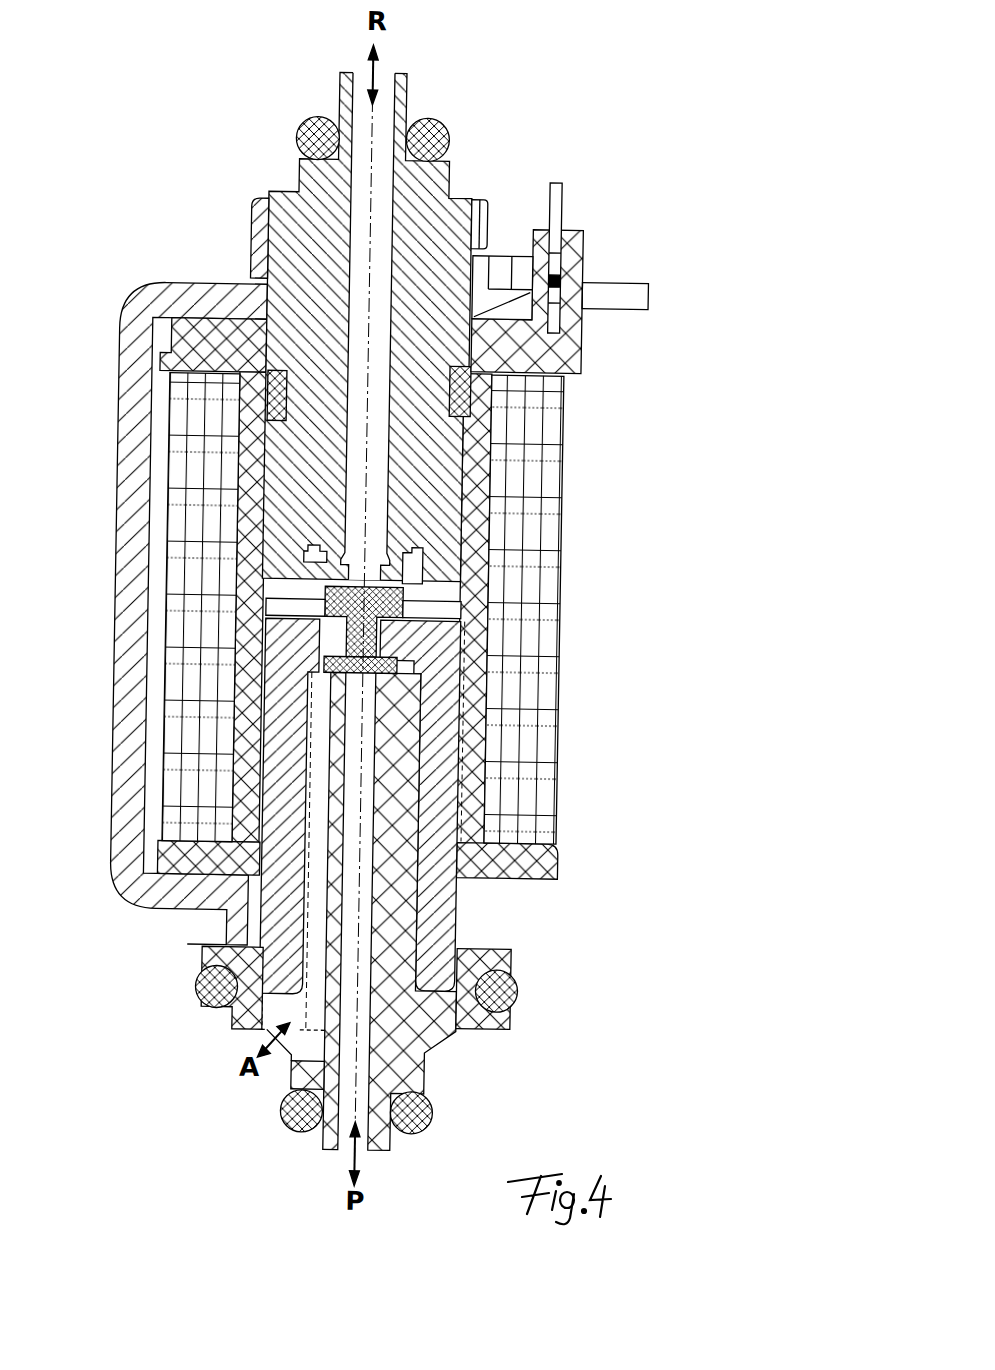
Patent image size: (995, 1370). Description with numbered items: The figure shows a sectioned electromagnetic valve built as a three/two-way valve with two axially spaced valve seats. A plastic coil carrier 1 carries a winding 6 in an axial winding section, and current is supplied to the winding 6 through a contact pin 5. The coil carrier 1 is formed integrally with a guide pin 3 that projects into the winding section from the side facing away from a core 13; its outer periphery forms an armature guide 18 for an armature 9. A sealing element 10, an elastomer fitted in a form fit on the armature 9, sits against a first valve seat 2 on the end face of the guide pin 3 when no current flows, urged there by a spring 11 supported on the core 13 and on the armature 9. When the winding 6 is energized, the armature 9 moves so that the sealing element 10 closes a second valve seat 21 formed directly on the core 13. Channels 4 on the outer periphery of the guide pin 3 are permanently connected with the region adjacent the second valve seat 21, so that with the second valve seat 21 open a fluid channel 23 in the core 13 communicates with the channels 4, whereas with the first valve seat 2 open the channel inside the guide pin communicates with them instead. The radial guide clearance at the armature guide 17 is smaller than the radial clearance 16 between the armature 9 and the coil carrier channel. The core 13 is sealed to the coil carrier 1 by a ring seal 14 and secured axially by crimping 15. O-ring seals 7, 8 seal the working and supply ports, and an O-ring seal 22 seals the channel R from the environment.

The coil carrier 1 is at (524, 344).
The first valve seat 2 is at (354, 678).
The guide pin 3 is at (407, 787).
The second fluid channels 4 is at (326, 844).
The contact pin 5 is at (558, 204).
The winding 6 is at (527, 477).
The O-ring seal 7 is at (511, 989).
The O-ring seal 8 is at (430, 1111).
The armature 9 is at (293, 657).
The sealing element 10 is at (354, 602).
The spring 11 is at (314, 562).
The core 13 is at (318, 344).
The ring seal 14 is at (463, 400).
The crimping 15 is at (255, 235).
The radial clearance 16 is at (273, 783).
The armature guide 17 is at (276, 912).
The armature guide 18 is at (427, 892).
The second valve seat 21 is at (391, 572).
The O-ring seal 22 is at (428, 140).
The fluid channel 23 is at (381, 231).